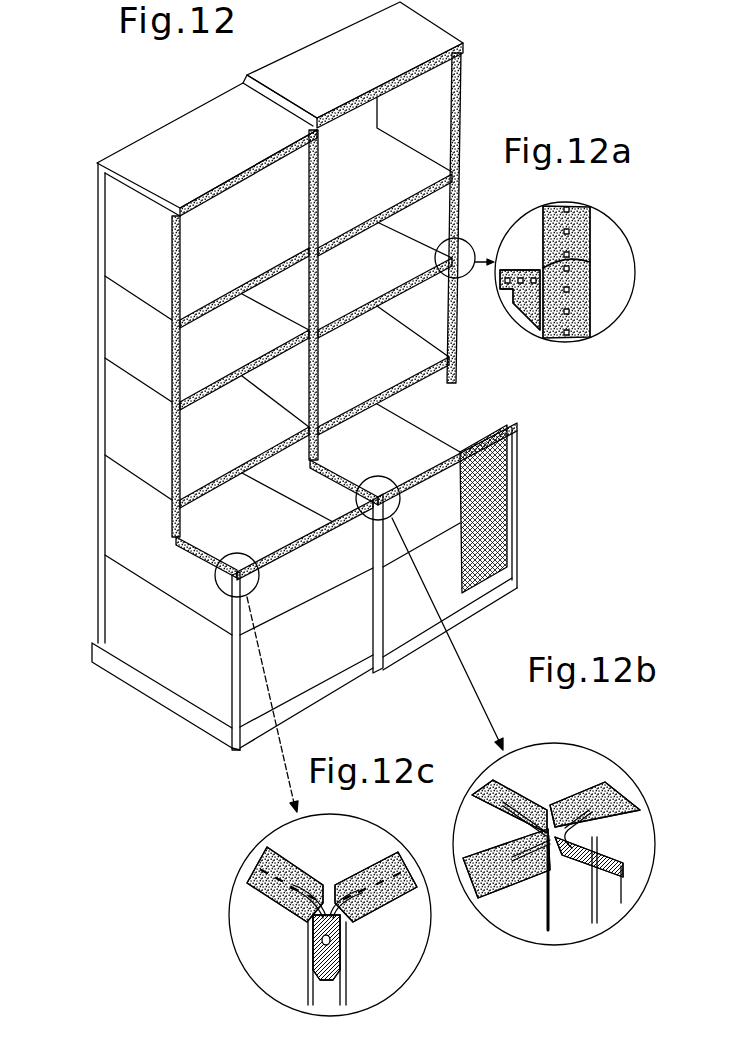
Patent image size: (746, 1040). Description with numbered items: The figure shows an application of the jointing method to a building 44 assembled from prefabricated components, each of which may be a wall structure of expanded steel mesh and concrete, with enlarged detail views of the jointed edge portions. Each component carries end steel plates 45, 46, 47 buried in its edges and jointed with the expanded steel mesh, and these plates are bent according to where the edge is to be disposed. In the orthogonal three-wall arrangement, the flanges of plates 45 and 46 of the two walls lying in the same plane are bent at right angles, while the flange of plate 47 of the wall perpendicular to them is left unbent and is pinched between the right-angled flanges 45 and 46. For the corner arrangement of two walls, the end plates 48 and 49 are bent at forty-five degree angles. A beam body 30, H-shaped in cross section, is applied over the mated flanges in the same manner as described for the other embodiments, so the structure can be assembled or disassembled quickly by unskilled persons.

In FIG. 12, the building 44 is at (93, 292).
In FIG. 12B, the end steel plate 45 is at (585, 835).
In FIG. 12B, the end steel plate 46 is at (527, 857).
In FIG. 12B, the end steel plate 47 is at (523, 840).
In FIG. 12C, the end plate 48 is at (362, 905).
In FIG. 12C, the end plate 49 is at (290, 889).
In FIG. 12C, the semicircular beam body 30 is at (318, 945).
In FIG. 12B, the semicircular beam body 30 is at (568, 857).